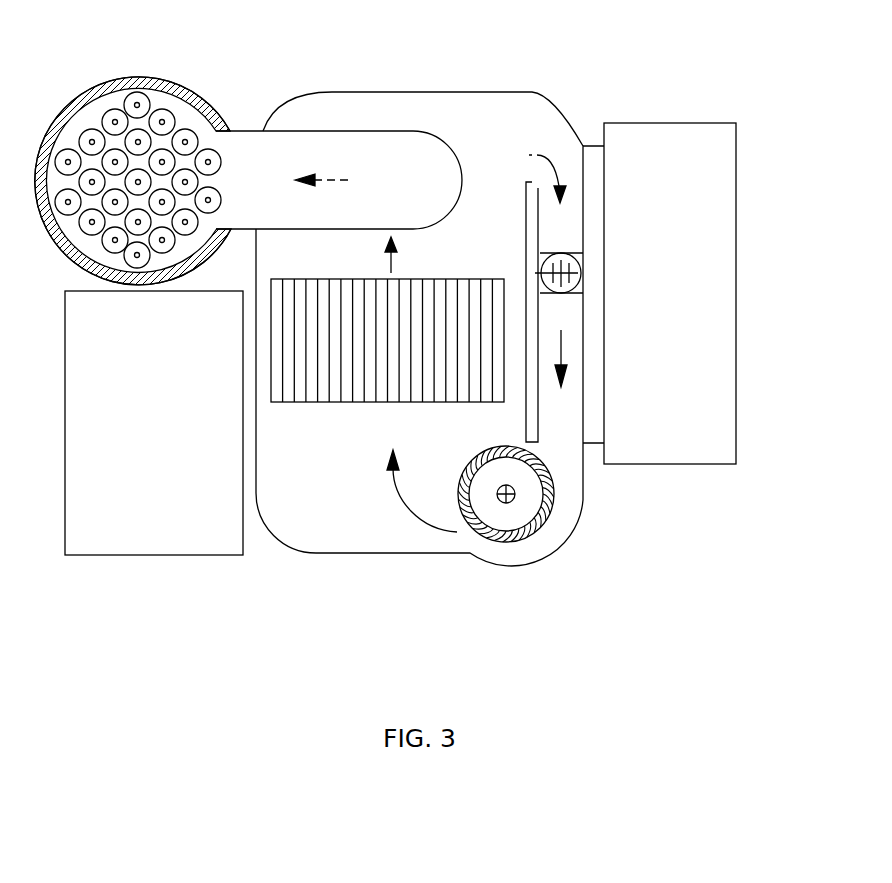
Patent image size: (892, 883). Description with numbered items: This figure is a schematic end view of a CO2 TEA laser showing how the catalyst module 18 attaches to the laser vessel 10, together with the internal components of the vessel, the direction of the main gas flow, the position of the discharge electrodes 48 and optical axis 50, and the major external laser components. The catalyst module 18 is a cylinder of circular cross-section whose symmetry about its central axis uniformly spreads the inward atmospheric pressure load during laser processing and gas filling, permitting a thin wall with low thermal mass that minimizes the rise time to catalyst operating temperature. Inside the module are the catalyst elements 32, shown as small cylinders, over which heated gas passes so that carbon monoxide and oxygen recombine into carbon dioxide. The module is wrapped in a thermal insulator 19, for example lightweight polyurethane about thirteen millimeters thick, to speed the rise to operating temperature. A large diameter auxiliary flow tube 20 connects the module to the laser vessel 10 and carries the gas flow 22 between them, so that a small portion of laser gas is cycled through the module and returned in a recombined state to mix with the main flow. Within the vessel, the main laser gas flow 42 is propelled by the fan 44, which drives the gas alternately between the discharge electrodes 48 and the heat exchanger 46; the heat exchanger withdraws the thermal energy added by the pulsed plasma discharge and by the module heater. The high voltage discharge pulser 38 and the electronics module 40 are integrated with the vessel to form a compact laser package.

The laser vessel 10 is at (472, 90).
The catalyst module 18 is at (165, 88).
The thermal insulator 19 is at (191, 90).
The auxiliary flow tube 20 is at (297, 131).
The gas flow 22 is at (348, 180).
The catalyst elements 32 is at (92, 130).
The high voltage discharge pulser 38 is at (628, 123).
The electronics module 40 is at (65, 443).
The main laser gas flow 42 is at (550, 158).
The fan 44 is at (537, 502).
The heat exchanger 46 is at (337, 402).
The discharge electrodes 48 is at (577, 273).
The optical axis 50 is at (561, 270).